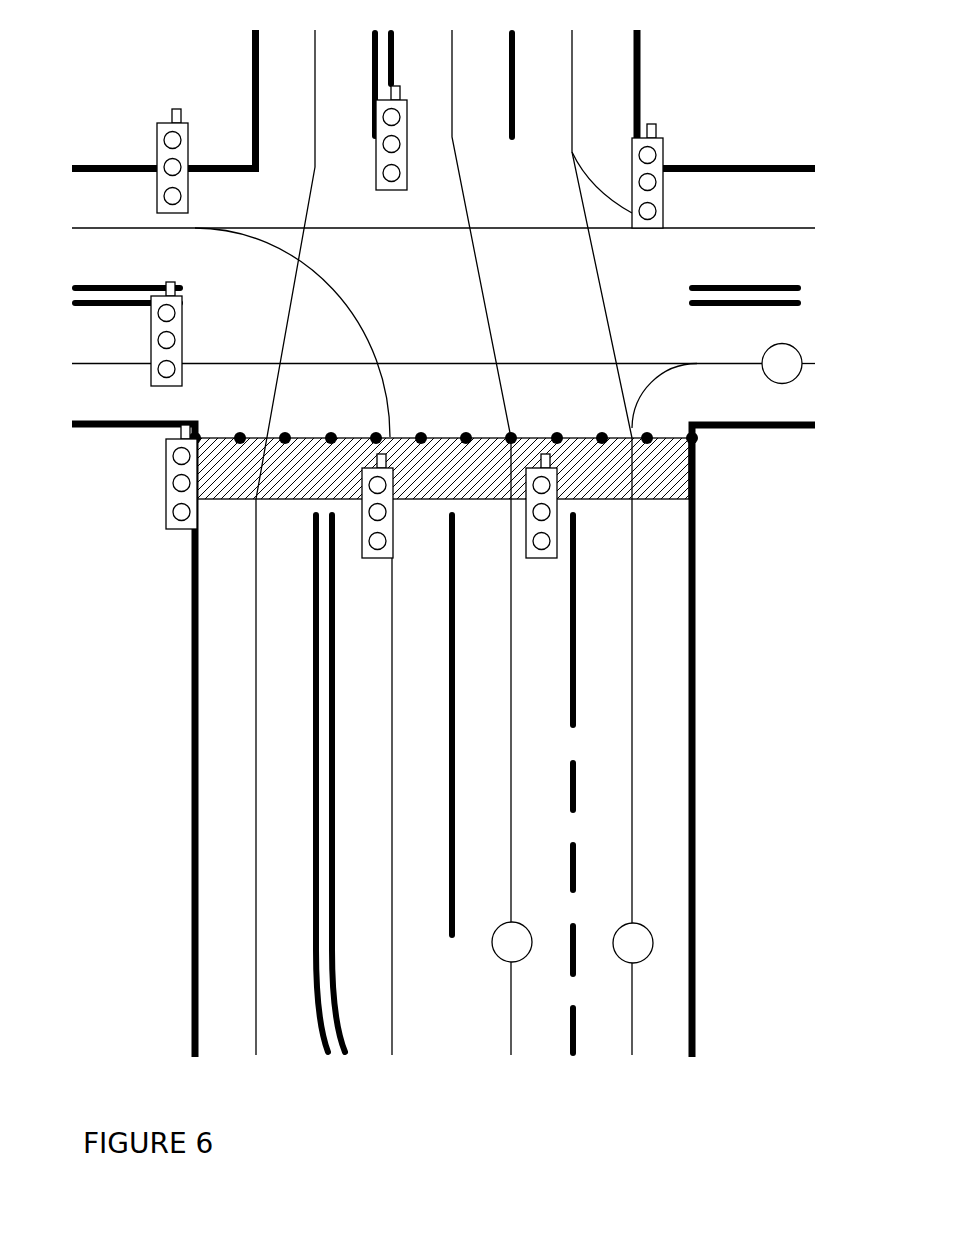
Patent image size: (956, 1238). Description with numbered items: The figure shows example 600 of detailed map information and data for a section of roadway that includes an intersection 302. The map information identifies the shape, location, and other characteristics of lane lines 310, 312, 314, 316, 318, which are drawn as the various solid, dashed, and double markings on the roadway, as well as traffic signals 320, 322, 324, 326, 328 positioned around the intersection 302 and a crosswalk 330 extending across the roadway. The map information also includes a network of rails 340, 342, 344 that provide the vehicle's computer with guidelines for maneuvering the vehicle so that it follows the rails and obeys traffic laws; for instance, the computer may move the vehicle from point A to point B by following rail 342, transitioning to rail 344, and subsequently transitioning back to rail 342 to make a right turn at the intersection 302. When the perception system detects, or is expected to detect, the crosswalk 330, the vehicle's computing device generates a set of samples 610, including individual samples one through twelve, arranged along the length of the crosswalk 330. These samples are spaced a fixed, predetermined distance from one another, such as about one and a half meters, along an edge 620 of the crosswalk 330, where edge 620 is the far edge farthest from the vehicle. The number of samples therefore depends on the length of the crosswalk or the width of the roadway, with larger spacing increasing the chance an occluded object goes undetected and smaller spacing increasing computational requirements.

The intersection 302 is at (413, 264).
The lane line 310 is at (697, 742).
The lane line 312 is at (574, 814).
The lane line 314 is at (457, 680).
The lane line 316 is at (313, 754).
The lane line 318 is at (190, 810).
The traffic signal 320 is at (167, 484).
The traffic signal 322 is at (151, 334).
The traffic signal 324 is at (157, 165).
The traffic signal 326 is at (377, 140).
The traffic signal 328 is at (663, 148).
The crosswalk 330 is at (697, 487).
The rail 340 is at (517, 643).
The rail 342 is at (632, 783).
The rail 344 is at (632, 402).
The set of samples 610 is at (178, 462).
The edge 620 is at (447, 433).
The example 600 is at (166, 1110).